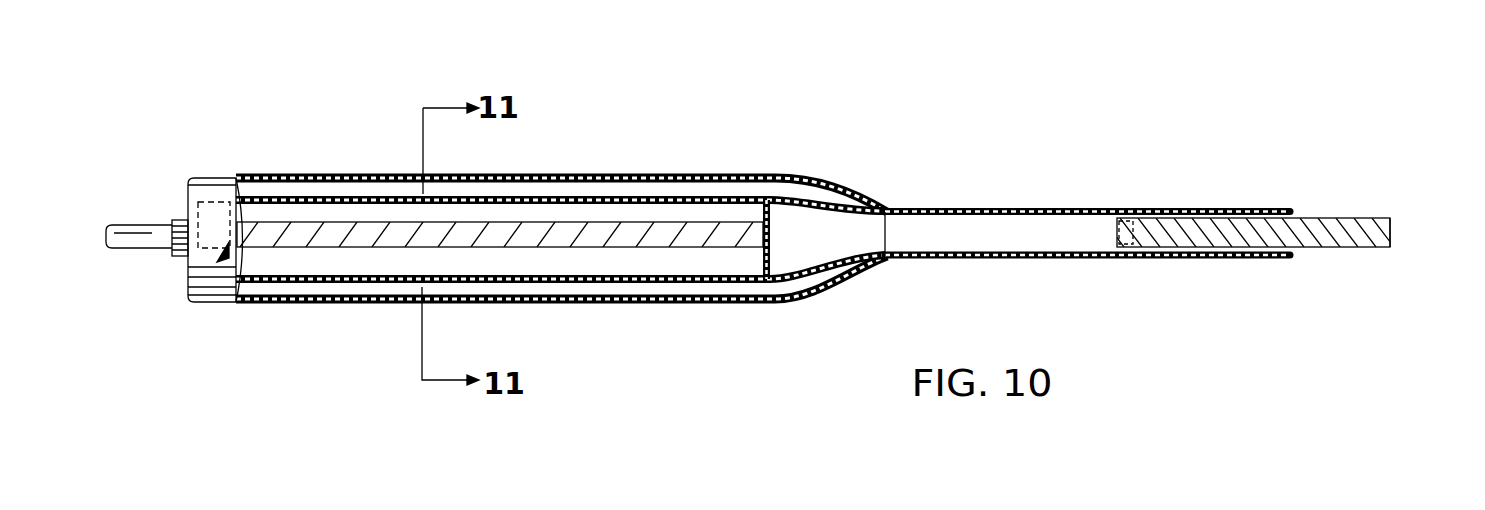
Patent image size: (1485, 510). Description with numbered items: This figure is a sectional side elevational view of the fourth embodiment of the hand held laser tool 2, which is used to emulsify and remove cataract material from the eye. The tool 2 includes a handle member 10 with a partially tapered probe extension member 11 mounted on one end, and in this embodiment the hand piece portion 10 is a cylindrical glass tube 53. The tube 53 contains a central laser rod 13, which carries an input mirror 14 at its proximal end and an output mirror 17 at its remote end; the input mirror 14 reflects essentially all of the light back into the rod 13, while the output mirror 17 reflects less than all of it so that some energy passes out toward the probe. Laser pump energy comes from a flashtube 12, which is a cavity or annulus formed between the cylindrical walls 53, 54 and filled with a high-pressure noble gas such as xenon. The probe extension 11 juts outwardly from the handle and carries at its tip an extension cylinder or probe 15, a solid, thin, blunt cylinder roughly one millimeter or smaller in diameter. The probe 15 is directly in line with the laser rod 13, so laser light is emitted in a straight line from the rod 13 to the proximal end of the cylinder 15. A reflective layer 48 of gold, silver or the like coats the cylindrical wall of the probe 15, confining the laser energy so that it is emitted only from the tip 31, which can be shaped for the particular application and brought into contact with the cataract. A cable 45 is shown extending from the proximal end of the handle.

The hand held laser tool 2 is at (774, 126).
The handle member 10 is at (262, 304).
The probe extension member 11 is at (990, 208).
The flashtube 12 is at (306, 208).
The laser rod 13 is at (677, 240).
The input mirror 14 is at (228, 245).
The probe cylinder 15 is at (1348, 247).
The output mirror 17 is at (773, 258).
The tip 31 is at (1392, 228).
The cable 45 is at (135, 250).
The reflective layer 48 is at (1318, 218).
The cylindrical glass tube 53 is at (628, 175).
The cylindrical wall 54 is at (903, 262).